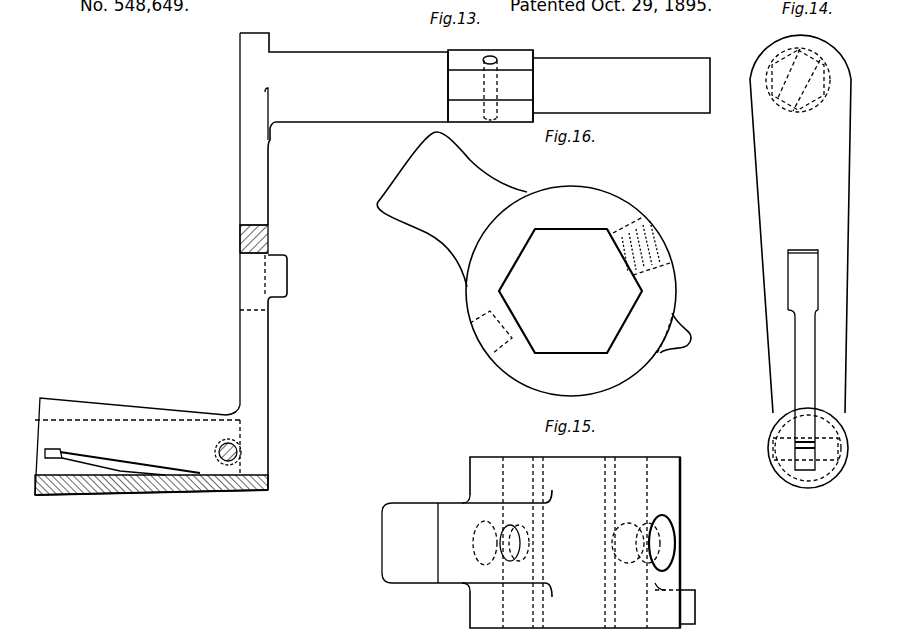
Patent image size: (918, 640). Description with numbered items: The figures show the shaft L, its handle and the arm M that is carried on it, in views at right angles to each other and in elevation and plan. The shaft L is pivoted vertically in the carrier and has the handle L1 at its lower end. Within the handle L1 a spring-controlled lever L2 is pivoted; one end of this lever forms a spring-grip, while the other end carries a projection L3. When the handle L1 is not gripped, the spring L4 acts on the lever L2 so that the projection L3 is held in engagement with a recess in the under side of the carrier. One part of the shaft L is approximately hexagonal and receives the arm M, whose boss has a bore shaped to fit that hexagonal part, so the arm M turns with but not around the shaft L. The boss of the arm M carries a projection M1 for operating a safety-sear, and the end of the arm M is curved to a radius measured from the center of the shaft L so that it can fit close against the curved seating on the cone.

In FIG. 13, the shaft L is at (475, 219).
In FIG. 14, the shaft L is at (812, 101).
In FIG. 13, the handle L1 is at (85, 495).
In FIG. 14, the handle L1 is at (838, 466).
In FIG. 13, the spring-controlled lever L2 is at (95, 401).
In FIG. 14, the spring-controlled lever L2 is at (803, 390).
In FIG. 13, the projection L3 is at (290, 268).
In FIG. 14, the projection L3 is at (795, 292).
In FIG. 13, the spring L4 is at (62, 456).
In FIG. 14, the spring L4 is at (797, 452).
In FIG. 16, the arm M is at (526, 264).
In FIG. 15, the arm M is at (531, 542).
In FIG. 16, the projection M1 is at (692, 342).
In FIG. 15, the projection M1 is at (695, 604).